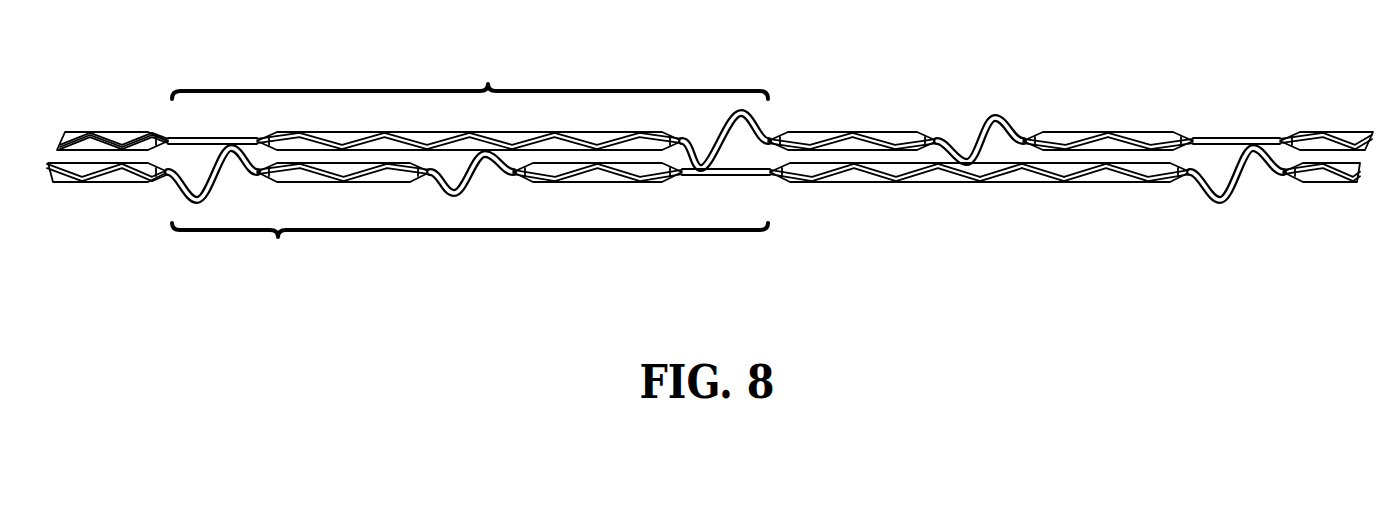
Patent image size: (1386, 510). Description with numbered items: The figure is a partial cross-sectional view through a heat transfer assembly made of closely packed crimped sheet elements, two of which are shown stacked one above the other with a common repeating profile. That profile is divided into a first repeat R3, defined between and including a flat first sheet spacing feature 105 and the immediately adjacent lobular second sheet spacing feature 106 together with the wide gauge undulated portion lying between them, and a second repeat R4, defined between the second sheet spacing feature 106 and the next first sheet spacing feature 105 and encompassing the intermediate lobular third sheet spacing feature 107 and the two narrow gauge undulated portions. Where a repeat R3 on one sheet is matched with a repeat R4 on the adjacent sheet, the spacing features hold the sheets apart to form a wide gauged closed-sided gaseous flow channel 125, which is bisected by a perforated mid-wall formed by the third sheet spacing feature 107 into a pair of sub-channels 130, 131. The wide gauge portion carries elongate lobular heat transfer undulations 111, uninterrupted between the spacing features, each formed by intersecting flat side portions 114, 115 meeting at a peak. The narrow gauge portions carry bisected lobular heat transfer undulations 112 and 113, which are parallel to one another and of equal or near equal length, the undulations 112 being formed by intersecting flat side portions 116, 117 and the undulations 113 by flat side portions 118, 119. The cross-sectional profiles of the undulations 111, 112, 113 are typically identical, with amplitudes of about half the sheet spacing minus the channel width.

The first sheet spacing feature 105 is at (1233, 122).
The second sheet spacing feature 106 is at (1219, 220).
The third sheet spacing feature 107 is at (970, 122).
The elongate lobular heat transfer undulation 111 is at (980, 225).
The bisected lobular heat transfer undulation 112 is at (852, 92).
The bisected lobular heat transfer undulation 113 is at (1108, 92).
The flat side portion 114 is at (1057, 184).
The flat side portion 115 is at (992, 184).
The flat side portion 116 is at (818, 131).
The flat side portion 117 is at (892, 131).
The flat side portion 118 is at (1072, 131).
The flat side portion 119 is at (1145, 131).
The wide gauged closed-sided gaseous flow channel 125 is at (388, 157).
The sub-channel 130 is at (633, 158).
The sub-channel 131 is at (313, 157).
The first repeat R3 is at (470, 71).
The second repeat R4 is at (470, 250).